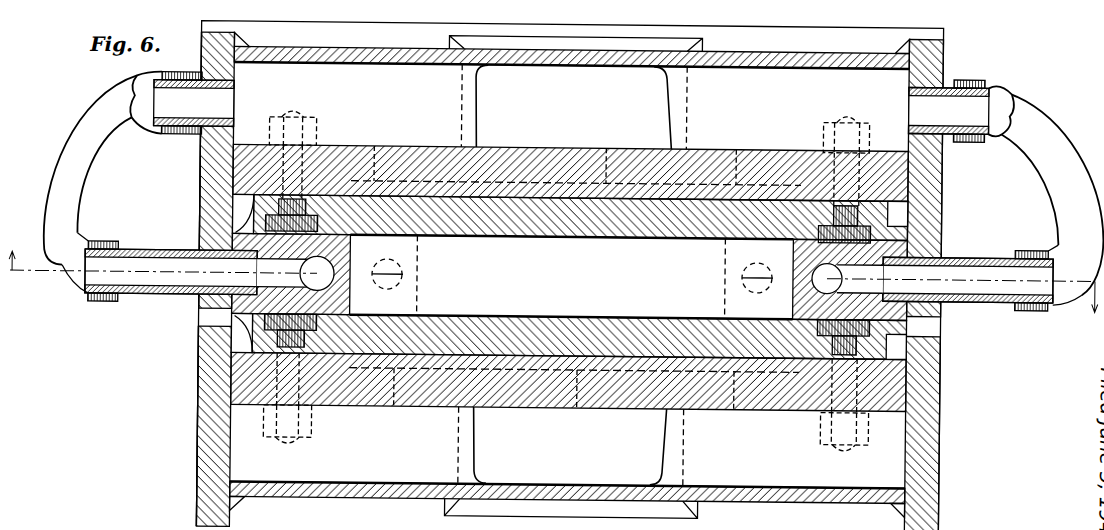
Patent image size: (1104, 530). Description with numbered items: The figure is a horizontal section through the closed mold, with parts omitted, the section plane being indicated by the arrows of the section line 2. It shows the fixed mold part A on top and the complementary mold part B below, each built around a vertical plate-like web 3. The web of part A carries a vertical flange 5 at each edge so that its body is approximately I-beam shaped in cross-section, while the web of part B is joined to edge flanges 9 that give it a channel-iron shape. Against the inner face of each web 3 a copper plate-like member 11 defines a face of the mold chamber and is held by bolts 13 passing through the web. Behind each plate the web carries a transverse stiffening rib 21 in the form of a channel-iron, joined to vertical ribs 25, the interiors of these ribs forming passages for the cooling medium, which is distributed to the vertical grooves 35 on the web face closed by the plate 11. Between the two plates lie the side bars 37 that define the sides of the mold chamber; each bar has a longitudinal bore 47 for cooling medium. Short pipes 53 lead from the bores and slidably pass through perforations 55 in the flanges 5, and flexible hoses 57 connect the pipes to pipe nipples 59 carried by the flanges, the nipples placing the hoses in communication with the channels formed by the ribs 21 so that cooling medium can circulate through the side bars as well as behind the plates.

The section line 2 is at (552, 291).
The web 3 is at (518, 158).
The vertical flange 5 is at (199, 163).
The edge flange 9 is at (199, 471).
The plate-like member 11 is at (669, 238).
The bolt 13 is at (270, 158).
The transverse stiffening rib 21 is at (348, 66).
The vertical rib 25 is at (460, 117).
The groove 35 is at (373, 150).
The bar 37 is at (350, 303).
The longitudinal bore 47 is at (338, 268).
The pipe 53 is at (178, 298).
The perforation 55 is at (232, 243).
The flexible hose 57 is at (60, 178).
The pipe nipple 59 is at (955, 100).
The fixed mold part A is at (199, 196).
The complementary mold part B is at (199, 428).